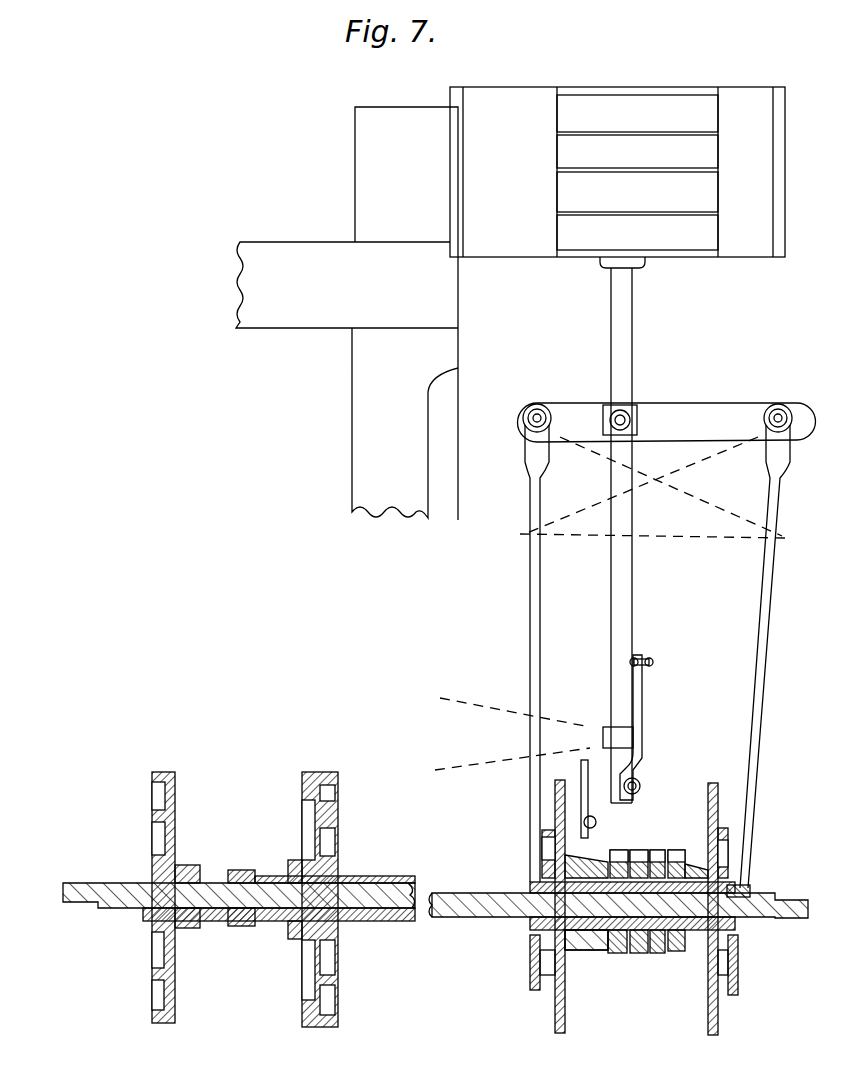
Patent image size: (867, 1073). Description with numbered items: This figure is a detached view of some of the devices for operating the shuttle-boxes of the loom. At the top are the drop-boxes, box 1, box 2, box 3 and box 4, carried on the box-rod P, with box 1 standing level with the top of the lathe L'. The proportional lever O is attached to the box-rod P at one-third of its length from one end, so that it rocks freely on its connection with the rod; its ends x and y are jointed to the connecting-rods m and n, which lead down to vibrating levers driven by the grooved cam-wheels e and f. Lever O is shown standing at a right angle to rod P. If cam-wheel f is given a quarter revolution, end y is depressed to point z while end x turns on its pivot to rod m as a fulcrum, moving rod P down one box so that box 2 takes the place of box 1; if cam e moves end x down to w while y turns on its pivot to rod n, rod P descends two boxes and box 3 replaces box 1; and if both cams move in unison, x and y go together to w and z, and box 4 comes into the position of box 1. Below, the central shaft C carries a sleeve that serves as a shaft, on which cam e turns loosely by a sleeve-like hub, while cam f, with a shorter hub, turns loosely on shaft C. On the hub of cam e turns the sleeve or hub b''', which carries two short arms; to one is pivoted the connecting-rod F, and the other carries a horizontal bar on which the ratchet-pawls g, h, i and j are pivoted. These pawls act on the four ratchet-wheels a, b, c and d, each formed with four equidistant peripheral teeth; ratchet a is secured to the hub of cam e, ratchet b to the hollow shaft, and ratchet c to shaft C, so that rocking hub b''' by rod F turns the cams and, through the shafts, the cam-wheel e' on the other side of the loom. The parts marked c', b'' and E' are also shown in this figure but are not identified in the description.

The box 1 is at (637, 232).
The box 2 is at (637, 192).
The box 3 is at (637, 151).
The box 4 is at (637, 113).
The lathe L' is at (347, 313).
The box-rod P is at (621, 535).
The proportional lever O is at (667, 422).
The end of lever O x is at (526, 418).
The end of lever O y is at (790, 418).
The point w is at (645, 490).
The point z is at (679, 493).
The connecting-rod m is at (530, 653).
The connecting-rod n is at (765, 656).
The arm c' is at (632, 727).
The pin b'' is at (656, 655).
The connecting-rod F is at (582, 776).
The shaft C is at (433, 900).
The sleeve E' is at (439, 894).
The cam-wheel e' is at (176, 897).
The cam-wheel f is at (502, 903).
The cam-wheel e is at (555, 906).
The ratchet-pawl g is at (618, 854).
The ratchet-pawl h is at (639, 854).
The ratchet-pawl i is at (657, 854).
The ratchet-pawl j is at (676, 854).
The ratchet-wheel a is at (617, 953).
The ratchet-wheel b is at (639, 953).
The ratchet-wheel c is at (657, 953).
The ratchet-wheel d is at (676, 953).
The sleeve or hub b''' is at (586, 950).